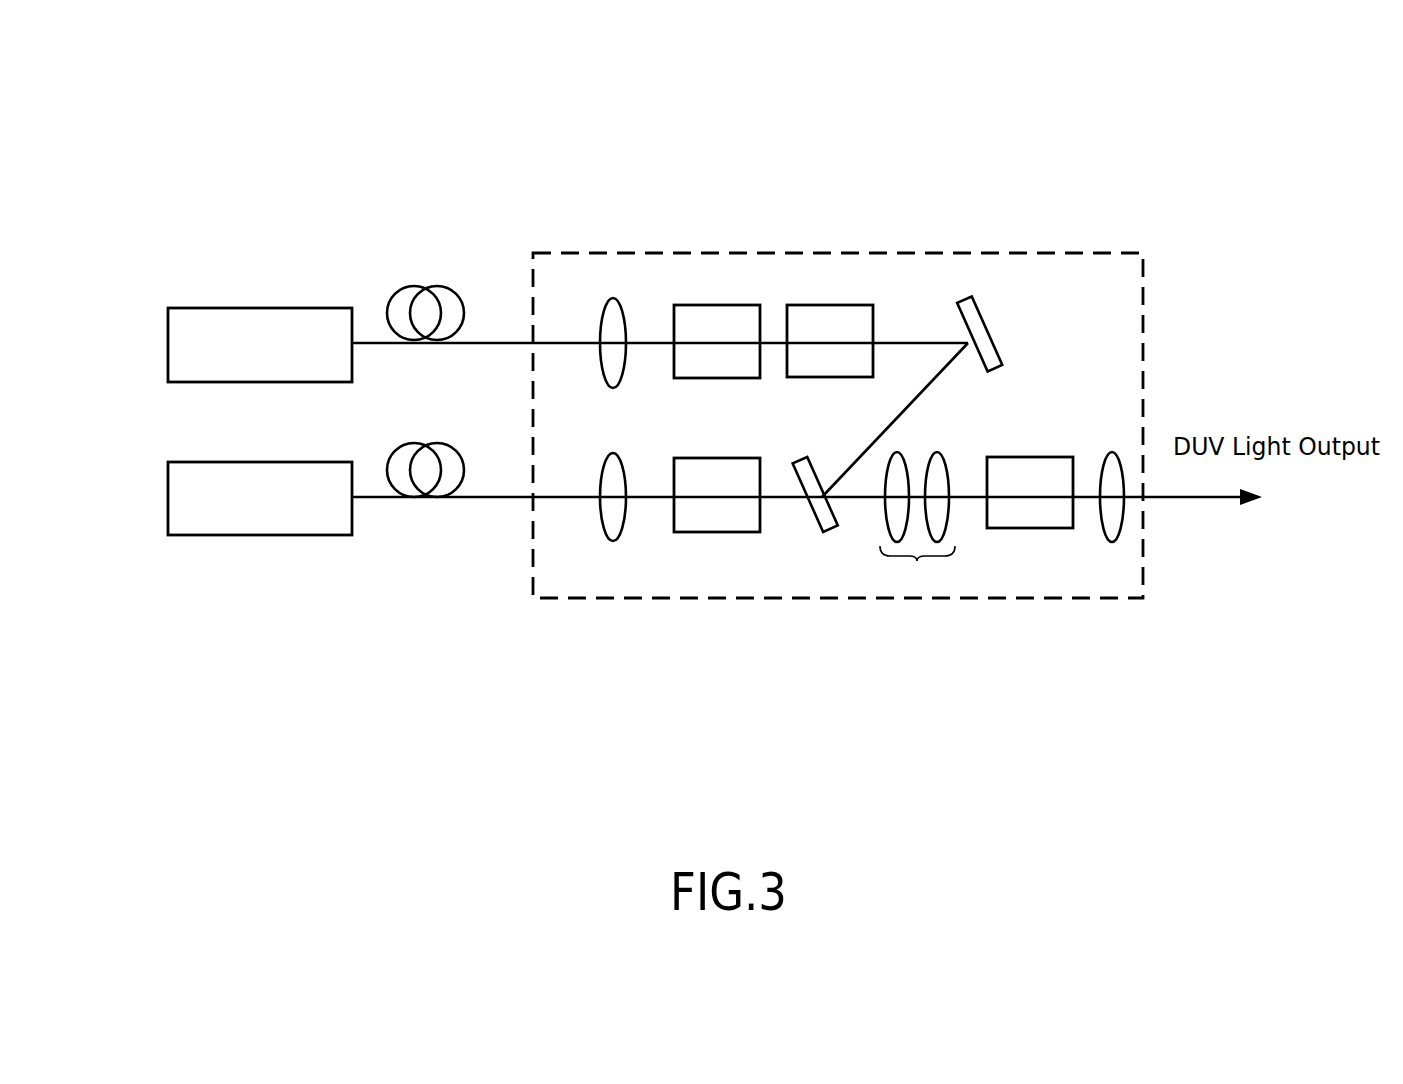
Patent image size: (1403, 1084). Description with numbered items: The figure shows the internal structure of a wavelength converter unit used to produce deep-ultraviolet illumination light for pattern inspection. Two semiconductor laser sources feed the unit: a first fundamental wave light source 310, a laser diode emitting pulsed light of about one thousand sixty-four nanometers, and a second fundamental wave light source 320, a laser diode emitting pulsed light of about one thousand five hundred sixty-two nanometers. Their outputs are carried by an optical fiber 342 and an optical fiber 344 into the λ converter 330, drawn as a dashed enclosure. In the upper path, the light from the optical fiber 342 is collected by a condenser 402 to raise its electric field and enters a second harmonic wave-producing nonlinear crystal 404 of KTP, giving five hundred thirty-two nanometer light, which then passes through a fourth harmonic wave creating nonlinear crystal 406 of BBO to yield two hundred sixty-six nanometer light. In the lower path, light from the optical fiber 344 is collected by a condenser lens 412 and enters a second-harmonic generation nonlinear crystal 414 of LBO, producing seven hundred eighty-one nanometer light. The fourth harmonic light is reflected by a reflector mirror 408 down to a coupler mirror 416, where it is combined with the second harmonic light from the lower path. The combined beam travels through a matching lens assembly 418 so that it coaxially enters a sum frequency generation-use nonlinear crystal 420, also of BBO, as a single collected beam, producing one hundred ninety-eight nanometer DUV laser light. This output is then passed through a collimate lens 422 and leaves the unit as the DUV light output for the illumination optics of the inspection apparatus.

The first fundamental wave light source 310 is at (226, 308).
The second fundamental wave light source 320 is at (226, 462).
The λ converter 330 is at (533, 557).
The optical fiber 342 is at (418, 287).
The optical fiber 344 is at (413, 445).
The condenser 402 is at (612, 298).
The second harmonic wave-producing nonlinear crystal 404 is at (687, 305).
The fourth harmonic wave creating nonlinear crystal 406 is at (862, 305).
The reflector mirror 408 is at (975, 312).
The condenser lens 412 is at (610, 538).
The second-harmonic generation nonlinear crystal 414 is at (745, 532).
The coupler mirror 416 is at (823, 530).
The matching lens assembly 418 is at (917, 561).
The sum frequency generation-use nonlinear crystal 420 is at (1063, 530).
The collimate lens 422 is at (1113, 542).